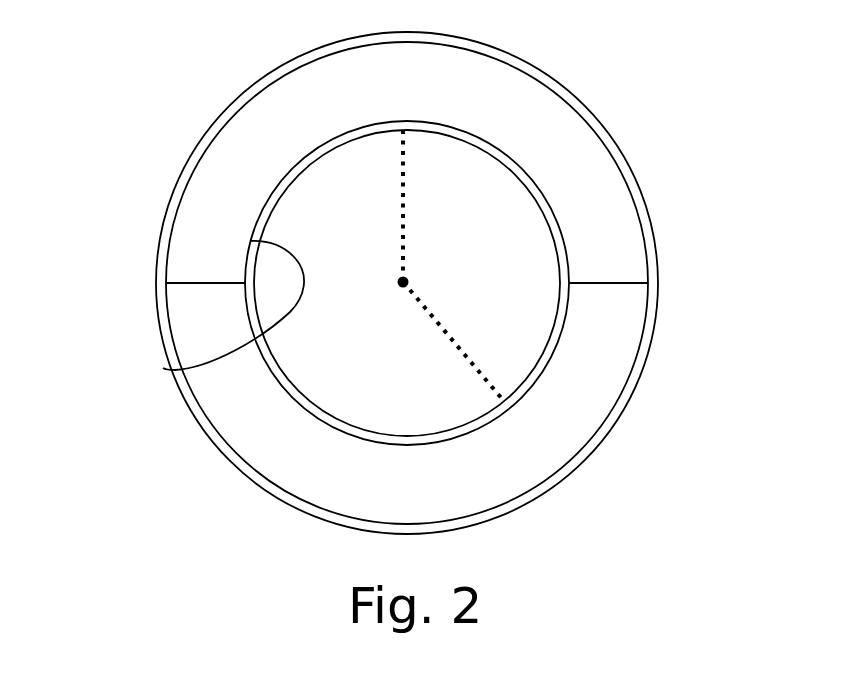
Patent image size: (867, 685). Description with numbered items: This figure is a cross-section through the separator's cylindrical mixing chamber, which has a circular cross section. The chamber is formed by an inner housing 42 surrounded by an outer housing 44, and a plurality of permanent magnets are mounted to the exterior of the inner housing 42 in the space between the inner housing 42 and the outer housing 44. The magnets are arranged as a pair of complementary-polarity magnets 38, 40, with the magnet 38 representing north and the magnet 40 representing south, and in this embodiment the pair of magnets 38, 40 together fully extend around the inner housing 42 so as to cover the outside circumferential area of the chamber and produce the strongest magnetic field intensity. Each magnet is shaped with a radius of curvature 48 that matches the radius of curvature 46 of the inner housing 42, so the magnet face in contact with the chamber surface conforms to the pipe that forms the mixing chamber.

The magnet 38 is at (600, 427).
The magnet 40 is at (515, 70).
The inner housing 42 is at (163, 368).
The outer housing 44 is at (627, 160).
The radius of curvature 46 is at (402, 212).
The radius of curvature 48 is at (457, 345).